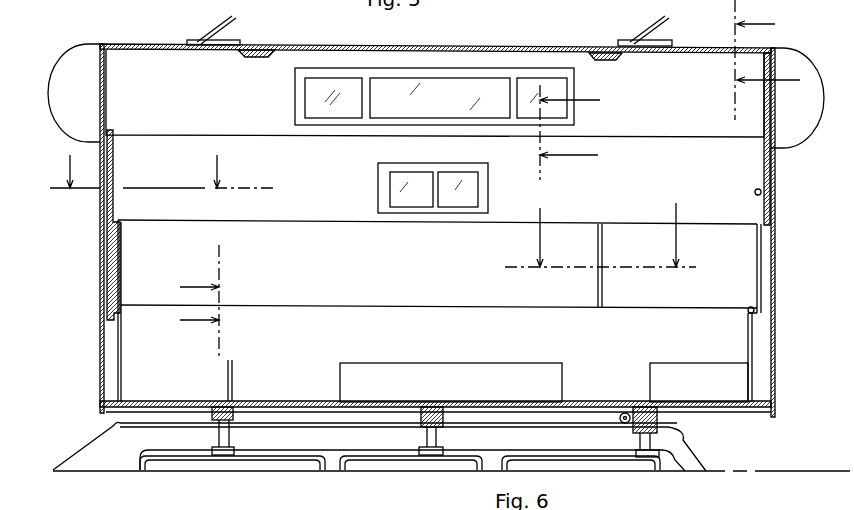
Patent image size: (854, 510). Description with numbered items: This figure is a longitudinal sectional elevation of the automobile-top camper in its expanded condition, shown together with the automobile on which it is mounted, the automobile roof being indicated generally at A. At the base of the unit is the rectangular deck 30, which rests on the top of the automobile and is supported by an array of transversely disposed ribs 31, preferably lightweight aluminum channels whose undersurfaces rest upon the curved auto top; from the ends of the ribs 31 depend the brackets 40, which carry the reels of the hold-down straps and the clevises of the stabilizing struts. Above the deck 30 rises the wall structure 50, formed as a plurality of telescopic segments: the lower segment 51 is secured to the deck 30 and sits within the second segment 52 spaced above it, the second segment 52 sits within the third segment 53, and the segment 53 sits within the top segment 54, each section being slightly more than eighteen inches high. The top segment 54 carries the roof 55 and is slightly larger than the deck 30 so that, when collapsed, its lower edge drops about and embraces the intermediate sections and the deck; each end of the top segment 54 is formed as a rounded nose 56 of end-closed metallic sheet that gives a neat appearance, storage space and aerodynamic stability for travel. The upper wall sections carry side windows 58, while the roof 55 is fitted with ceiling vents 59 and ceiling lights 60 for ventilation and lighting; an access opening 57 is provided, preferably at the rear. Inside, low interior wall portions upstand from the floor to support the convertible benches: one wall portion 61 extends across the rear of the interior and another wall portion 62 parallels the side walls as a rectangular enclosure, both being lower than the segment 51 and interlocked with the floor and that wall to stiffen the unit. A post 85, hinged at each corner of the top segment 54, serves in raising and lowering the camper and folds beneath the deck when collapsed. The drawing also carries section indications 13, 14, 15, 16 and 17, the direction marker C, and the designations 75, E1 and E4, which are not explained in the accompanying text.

The roof 55 is at (517, 44).
The rounded nose 56 is at (52, 90).
The post 85 is at (100, 333).
The wall structure 50 is at (92, 264).
The top segment 54 is at (176, 68).
The side windows 58 is at (403, 107).
The third segment 53 is at (642, 204).
The second segment 52 is at (333, 284).
The lower segment 51 is at (545, 353).
The interior wall portion 62 is at (450, 372).
The access opening 57 is at (742, 359).
The deck 30 is at (516, 406).
The interior wall portion 61 is at (236, 373).
The ribs 31 is at (228, 398).
The brackets 40 is at (232, 414).
The ceiling vents 59 is at (234, 16).
The ceiling lights 60 is at (255, 57).
The vehicle roof A is at (390, 448).
The section line 13 is at (194, 301).
The section line 14 is at (611, 235).
The section line 15 is at (153, 169).
The section line 16 is at (767, 60).
The section line 17 is at (572, 129).
The direction C is at (75, 23).
The element 75 is at (304, 500).
The element E1 is at (229, 496).
The element E4 is at (97, 503).